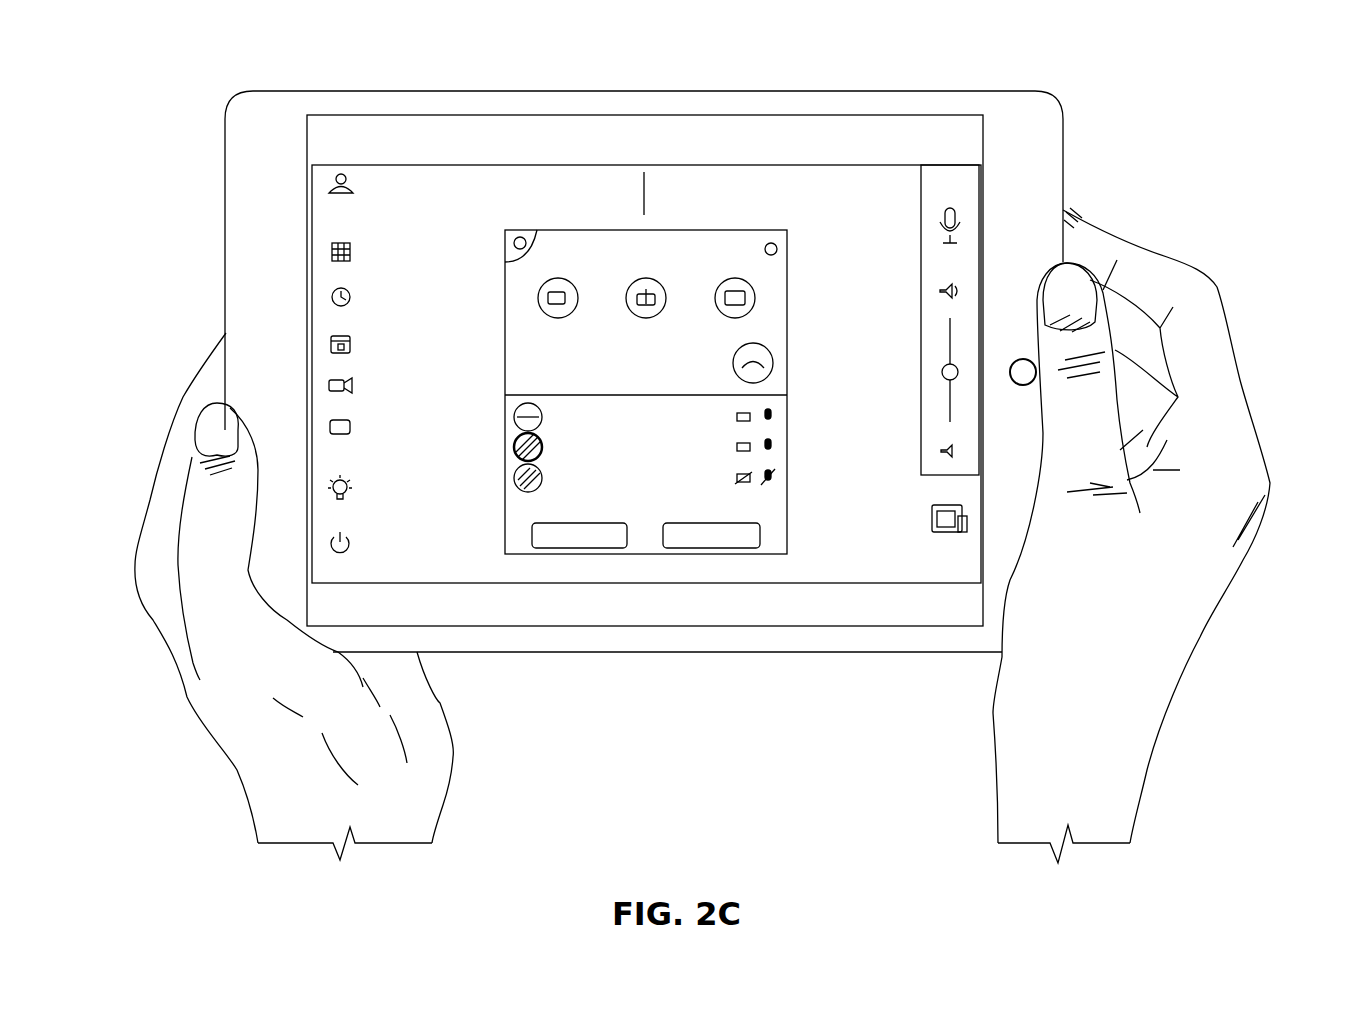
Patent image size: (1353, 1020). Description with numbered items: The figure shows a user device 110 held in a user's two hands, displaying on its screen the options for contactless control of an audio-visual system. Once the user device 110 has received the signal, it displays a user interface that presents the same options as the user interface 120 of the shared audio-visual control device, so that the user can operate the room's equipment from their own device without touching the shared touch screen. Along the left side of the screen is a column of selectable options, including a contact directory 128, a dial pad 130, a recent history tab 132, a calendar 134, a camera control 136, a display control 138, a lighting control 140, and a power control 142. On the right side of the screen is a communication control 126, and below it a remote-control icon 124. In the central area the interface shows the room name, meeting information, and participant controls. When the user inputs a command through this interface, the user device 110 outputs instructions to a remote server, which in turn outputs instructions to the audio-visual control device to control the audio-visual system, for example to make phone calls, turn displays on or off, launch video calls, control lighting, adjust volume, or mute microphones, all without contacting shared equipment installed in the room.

The user device 110 is at (740, 91).
The user interface 120 is at (454, 198).
The remote-control icon 124 is at (967, 517).
The communication control 126 is at (979, 237).
The contact directory 128 is at (313, 186).
The dial pad 130 is at (313, 253).
The recent history tab 132 is at (313, 297).
The calendar 134 is at (313, 345).
The camera control 136 is at (313, 388).
The display control 138 is at (313, 435).
The lighting control 140 is at (313, 498).
The power control 142 is at (313, 551).